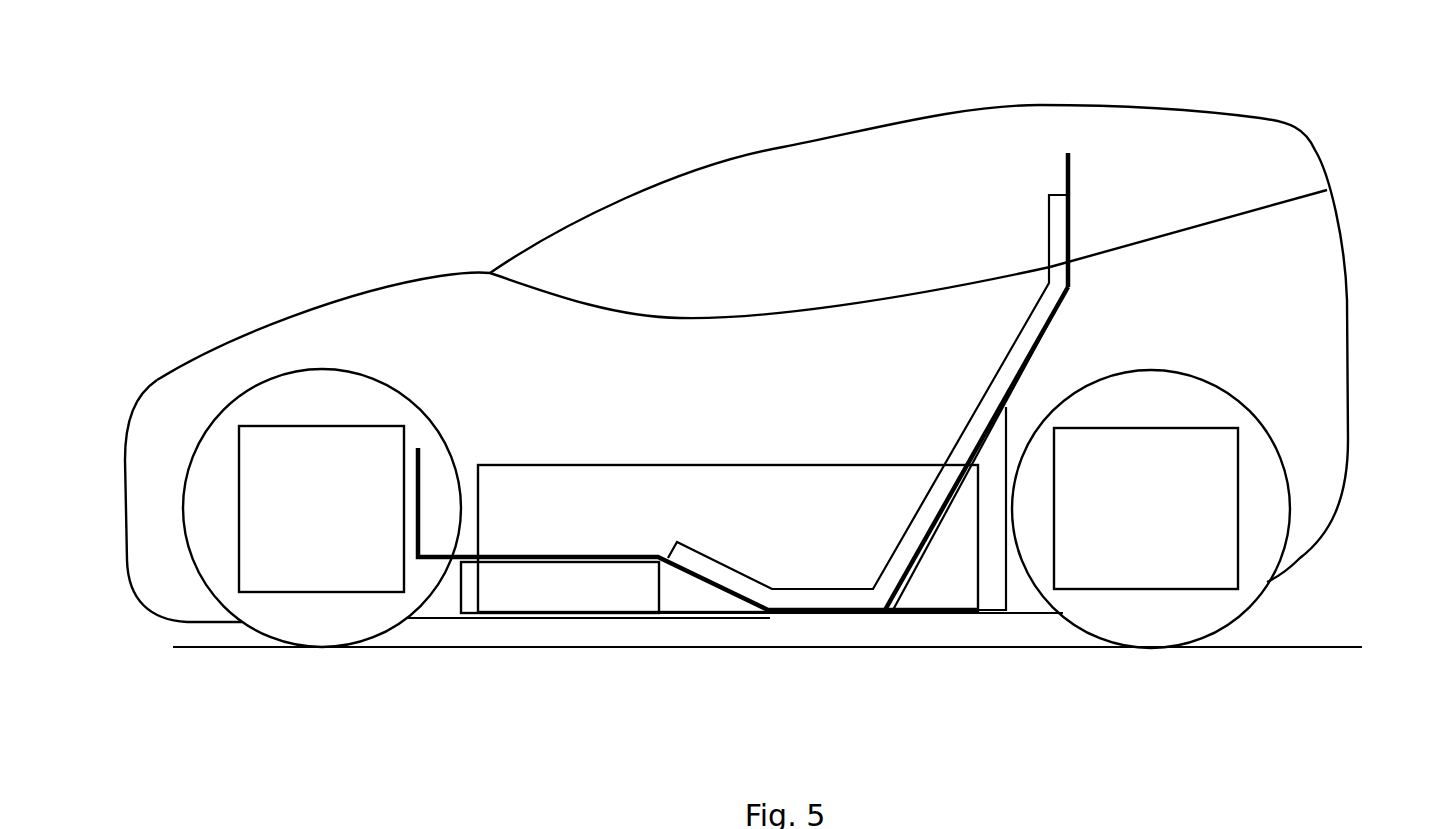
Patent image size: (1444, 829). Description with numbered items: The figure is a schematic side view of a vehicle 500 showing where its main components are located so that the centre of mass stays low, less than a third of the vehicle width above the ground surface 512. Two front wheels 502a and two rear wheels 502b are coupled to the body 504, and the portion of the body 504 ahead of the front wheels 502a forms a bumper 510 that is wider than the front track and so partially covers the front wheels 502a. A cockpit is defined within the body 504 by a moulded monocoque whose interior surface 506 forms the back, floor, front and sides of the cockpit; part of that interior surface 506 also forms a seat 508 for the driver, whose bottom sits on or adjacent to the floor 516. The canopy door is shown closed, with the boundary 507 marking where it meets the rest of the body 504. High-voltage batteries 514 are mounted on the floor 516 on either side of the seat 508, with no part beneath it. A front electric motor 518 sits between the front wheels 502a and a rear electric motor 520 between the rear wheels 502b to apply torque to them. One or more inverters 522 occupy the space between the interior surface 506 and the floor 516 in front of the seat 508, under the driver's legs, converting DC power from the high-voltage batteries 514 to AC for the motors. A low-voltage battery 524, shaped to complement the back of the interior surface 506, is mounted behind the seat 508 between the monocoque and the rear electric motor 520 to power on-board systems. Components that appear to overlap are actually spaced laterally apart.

The vehicle 500 is at (312, 130).
The front wheels 502a is at (253, 628).
The rear wheels 502b is at (1238, 617).
The body 504 is at (1337, 217).
The interior surface of the monocoque 506 is at (1073, 168).
The boundary between the canopy door and the body 507 is at (668, 317).
The seat 508 is at (997, 373).
The bumper 510 is at (128, 443).
The ground surface 512 is at (888, 648).
The high-voltage batteries 514 is at (580, 465).
The floor 516 is at (1020, 615).
The front electric motor 518 is at (320, 425).
The rear electric motor 520 is at (1145, 425).
The inverters 522 is at (460, 593).
The low-voltage battery 524 is at (1013, 435).